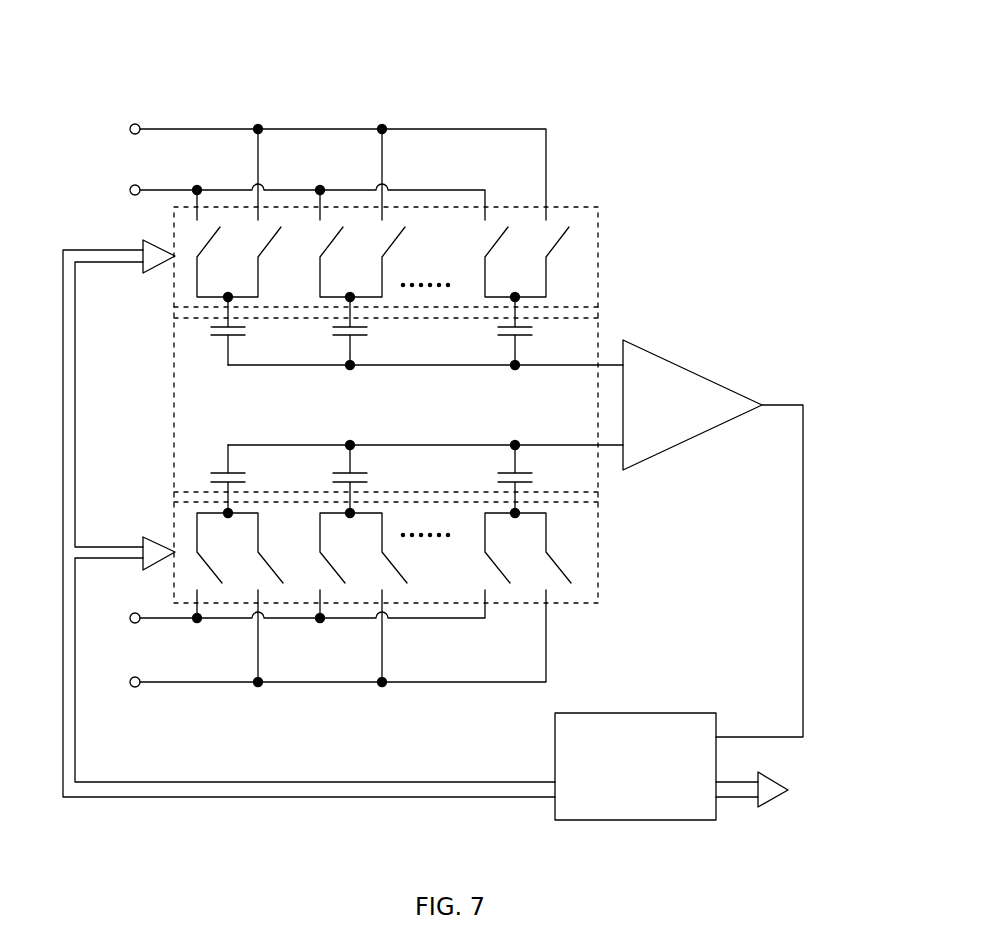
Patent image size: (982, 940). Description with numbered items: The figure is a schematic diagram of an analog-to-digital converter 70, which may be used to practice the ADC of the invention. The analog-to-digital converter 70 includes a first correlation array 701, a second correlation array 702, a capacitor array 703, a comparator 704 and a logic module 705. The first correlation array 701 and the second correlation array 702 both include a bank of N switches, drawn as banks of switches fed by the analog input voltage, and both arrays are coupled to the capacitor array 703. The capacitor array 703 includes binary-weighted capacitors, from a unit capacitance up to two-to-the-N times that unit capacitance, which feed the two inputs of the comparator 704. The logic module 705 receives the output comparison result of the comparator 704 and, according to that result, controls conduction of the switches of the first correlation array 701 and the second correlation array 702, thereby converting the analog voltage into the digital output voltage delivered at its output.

The analog-to-digital converter 70 is at (695, 96).
The first correlation array 701 is at (600, 255).
The second correlation array 702 is at (600, 548).
The capacitor array 703 is at (600, 330).
The comparator 704 is at (697, 440).
The logic module 705 is at (638, 712).